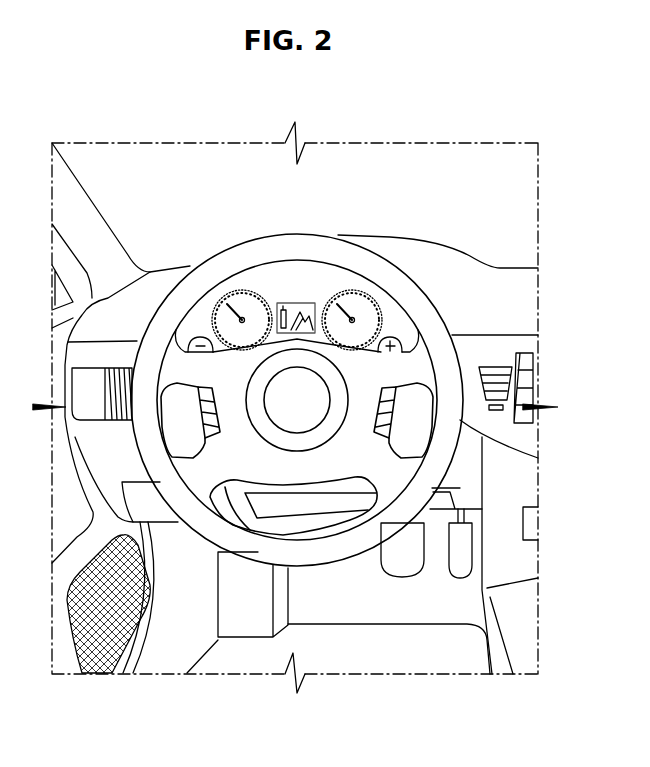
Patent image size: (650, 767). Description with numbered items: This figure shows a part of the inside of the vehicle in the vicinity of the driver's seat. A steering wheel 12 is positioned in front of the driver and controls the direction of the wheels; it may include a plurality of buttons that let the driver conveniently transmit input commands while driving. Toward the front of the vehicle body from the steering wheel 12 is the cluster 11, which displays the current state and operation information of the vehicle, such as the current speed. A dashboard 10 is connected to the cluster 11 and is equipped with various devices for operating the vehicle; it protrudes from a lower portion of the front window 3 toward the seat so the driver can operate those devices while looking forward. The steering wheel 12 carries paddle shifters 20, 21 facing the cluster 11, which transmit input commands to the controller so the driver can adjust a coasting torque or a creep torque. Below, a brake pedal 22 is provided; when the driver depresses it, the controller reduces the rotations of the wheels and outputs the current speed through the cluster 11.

The front window 3 is at (426, 162).
The dashboard 10 is at (506, 285).
The cluster 11 is at (263, 283).
The steering wheel 12 is at (298, 245).
The paddle shifter 20 is at (392, 333).
The paddle shifter 21 is at (200, 335).
The brake pedal 22 is at (400, 578).